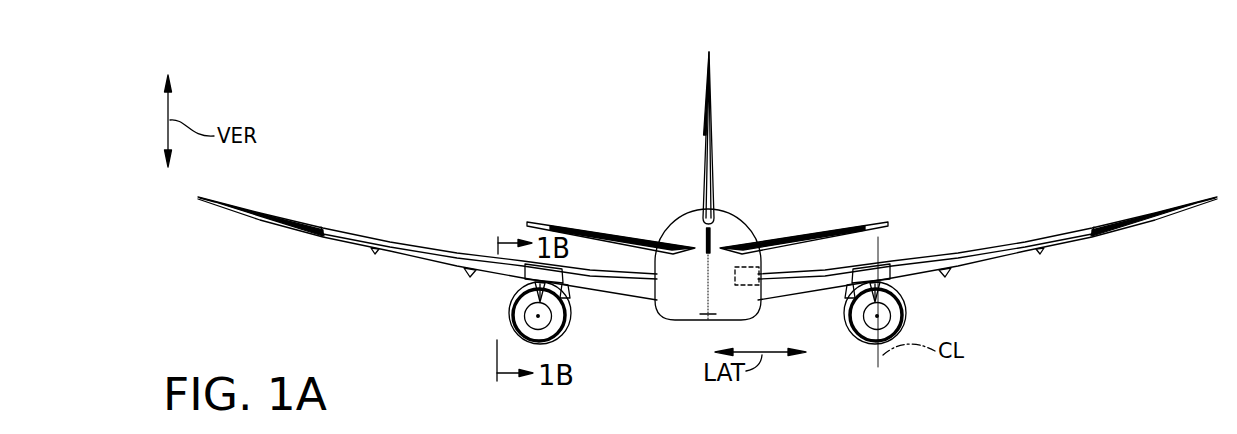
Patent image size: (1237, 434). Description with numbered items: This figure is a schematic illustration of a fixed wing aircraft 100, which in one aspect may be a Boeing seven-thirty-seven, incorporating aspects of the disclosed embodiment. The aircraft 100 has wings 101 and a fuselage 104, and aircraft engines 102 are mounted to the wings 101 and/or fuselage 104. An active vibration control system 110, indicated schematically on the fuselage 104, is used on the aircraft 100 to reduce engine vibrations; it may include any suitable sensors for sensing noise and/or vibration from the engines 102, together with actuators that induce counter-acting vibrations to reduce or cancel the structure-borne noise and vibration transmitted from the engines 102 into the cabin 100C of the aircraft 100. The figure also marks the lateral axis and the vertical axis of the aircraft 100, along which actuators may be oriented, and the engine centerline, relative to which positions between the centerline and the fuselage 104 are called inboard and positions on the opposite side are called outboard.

The aircraft 100 is at (404, 108).
The cabin 100C is at (670, 196).
The wings 101 is at (291, 217).
The aircraft engines 102 is at (510, 303).
The fuselage 104 is at (742, 241).
The active vibration control system 110 is at (760, 269).